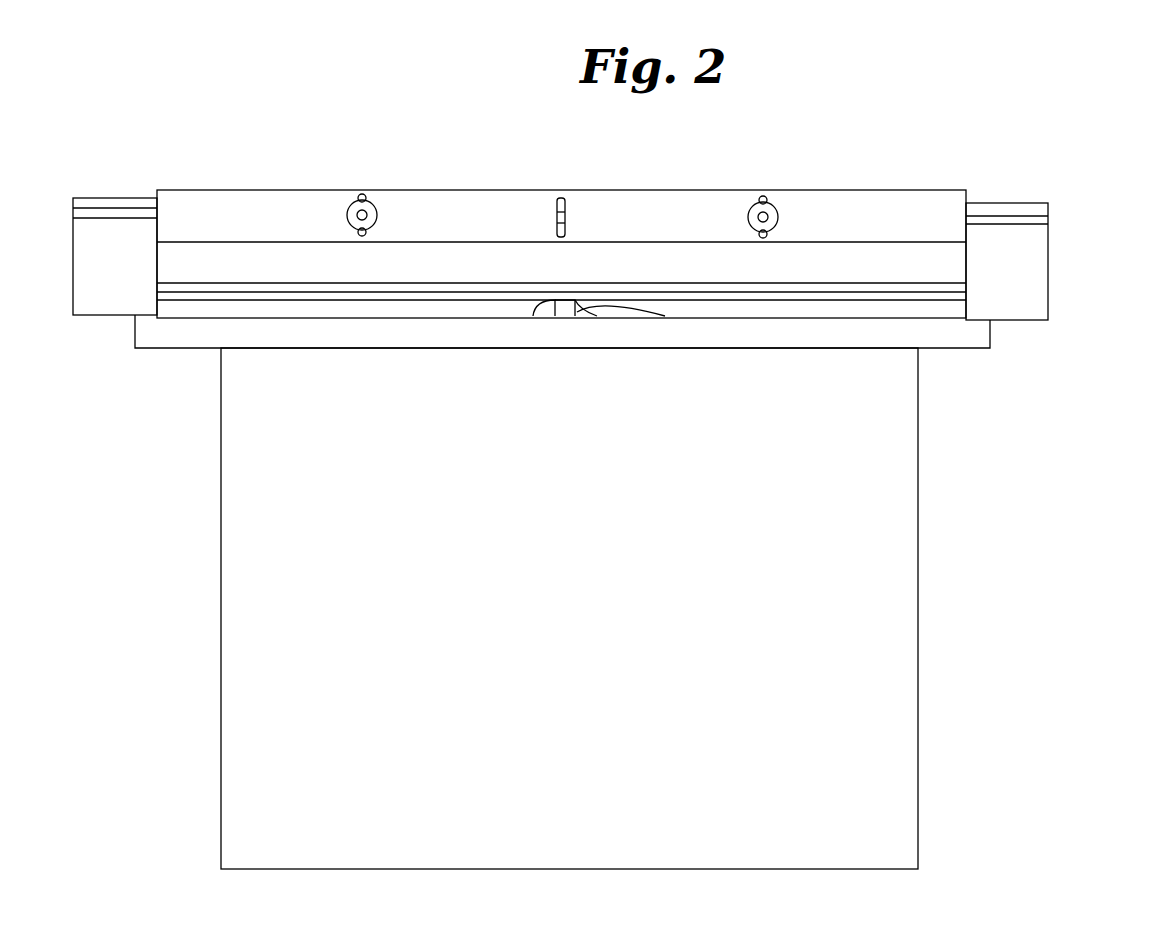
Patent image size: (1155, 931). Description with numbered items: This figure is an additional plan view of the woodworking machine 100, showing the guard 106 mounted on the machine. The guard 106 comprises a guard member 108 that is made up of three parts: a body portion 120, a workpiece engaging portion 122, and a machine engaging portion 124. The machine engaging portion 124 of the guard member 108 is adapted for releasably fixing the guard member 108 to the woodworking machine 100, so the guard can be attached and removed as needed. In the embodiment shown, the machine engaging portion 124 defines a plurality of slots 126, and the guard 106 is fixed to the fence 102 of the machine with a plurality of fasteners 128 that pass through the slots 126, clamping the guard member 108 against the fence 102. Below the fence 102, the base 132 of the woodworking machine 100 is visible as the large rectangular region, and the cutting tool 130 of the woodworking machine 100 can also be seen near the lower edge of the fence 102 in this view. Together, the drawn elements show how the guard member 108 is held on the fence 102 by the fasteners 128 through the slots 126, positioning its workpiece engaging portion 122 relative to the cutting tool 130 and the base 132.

The woodworking machine 100 is at (975, 709).
The fence 102 is at (142, 198).
The guard 106 is at (970, 249).
The guard member 108 is at (968, 283).
The body portion 120 is at (153, 268).
The workpiece engaging portion 122 is at (283, 298).
The machine engaging portion 124 is at (155, 230).
The slots 126 is at (566, 203).
The fasteners 128 is at (368, 213).
The cutting tool 130 is at (600, 300).
The base 132 is at (600, 603).